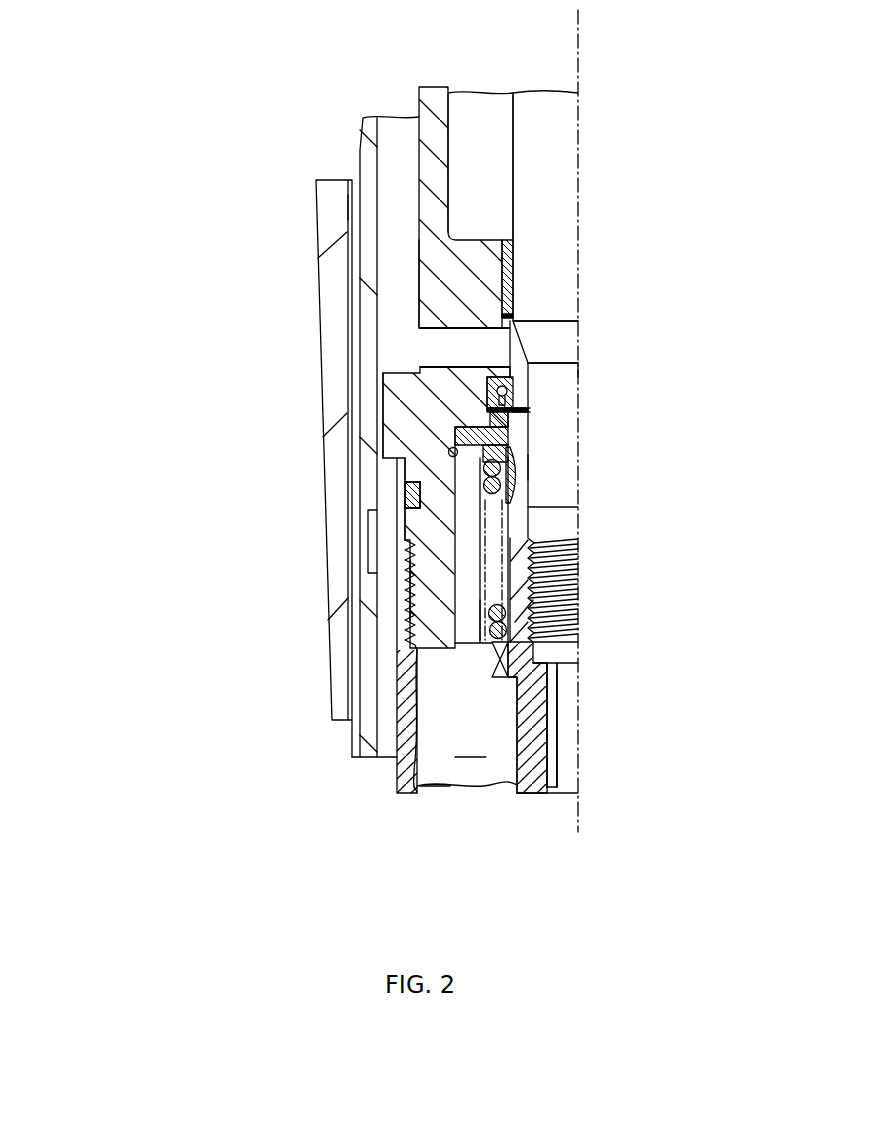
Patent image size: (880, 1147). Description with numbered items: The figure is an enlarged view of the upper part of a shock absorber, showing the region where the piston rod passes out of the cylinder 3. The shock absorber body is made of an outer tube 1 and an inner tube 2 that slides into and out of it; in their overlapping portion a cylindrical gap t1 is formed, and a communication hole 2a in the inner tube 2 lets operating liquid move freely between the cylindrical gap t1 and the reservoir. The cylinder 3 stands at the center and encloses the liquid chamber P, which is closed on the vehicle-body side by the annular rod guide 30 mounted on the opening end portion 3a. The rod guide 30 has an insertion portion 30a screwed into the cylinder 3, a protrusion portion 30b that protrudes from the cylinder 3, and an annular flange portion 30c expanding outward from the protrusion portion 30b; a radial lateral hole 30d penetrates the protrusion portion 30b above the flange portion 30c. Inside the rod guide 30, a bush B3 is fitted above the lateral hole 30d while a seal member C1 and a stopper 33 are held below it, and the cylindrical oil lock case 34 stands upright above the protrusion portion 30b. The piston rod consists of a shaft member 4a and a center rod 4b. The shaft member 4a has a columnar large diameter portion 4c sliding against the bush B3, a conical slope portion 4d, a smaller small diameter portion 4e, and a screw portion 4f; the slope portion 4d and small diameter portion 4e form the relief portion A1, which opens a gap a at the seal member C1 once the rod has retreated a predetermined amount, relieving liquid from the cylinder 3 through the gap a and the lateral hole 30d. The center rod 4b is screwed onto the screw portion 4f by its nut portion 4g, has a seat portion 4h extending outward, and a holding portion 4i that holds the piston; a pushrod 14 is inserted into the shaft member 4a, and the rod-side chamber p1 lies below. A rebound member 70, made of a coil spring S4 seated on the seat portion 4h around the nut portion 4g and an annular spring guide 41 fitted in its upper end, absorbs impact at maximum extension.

The outer tube 1 is at (316, 190).
The cylindrical gap t1 is at (352, 207).
The inner tube 2 is at (365, 120).
The communication hole 2a is at (368, 543).
The cylinder 3 is at (403, 775).
The opening end portion 3a is at (400, 583).
The oil lock case 34 is at (418, 102).
The shaft member 4a is at (512, 107).
The large diameter portion 4c is at (527, 173).
The bush B3 is at (514, 264).
The slope portion 4d is at (563, 345).
The relief portion A1 is at (580, 377).
The rod guide 30 is at (402, 640).
The insertion portion 30a is at (423, 607).
The protrusion portion 30b is at (418, 267).
The flange portion 30c is at (392, 408).
The lateral hole 30d is at (433, 343).
The stopper 33 is at (455, 437).
The seal member C1 is at (530, 422).
The gap a is at (517, 397).
The spring guide 41 is at (520, 482).
The rebound member 70 is at (520, 459).
The small diameter portion 4e is at (558, 467).
The seat portion 4h is at (483, 622).
The coil spring S4 is at (490, 614).
The screw portion 4f is at (560, 588).
The nut portion 4g is at (548, 612).
The center rod 4b is at (504, 772).
The holding portion 4i is at (533, 723).
The pushrod 14 is at (568, 770).
The liquid chamber P is at (433, 784).
The rod-side chamber p1 is at (471, 745).